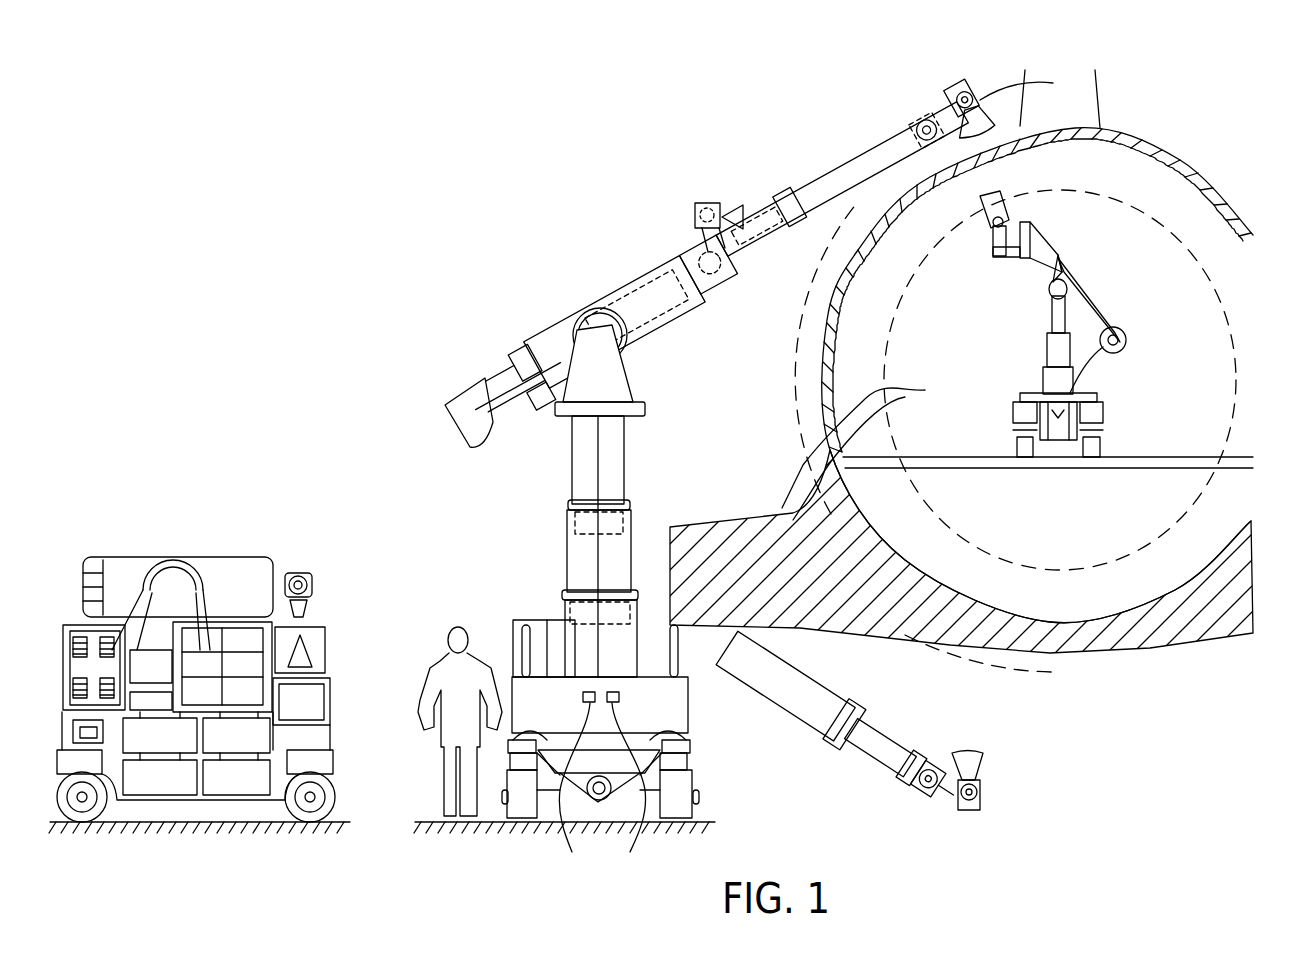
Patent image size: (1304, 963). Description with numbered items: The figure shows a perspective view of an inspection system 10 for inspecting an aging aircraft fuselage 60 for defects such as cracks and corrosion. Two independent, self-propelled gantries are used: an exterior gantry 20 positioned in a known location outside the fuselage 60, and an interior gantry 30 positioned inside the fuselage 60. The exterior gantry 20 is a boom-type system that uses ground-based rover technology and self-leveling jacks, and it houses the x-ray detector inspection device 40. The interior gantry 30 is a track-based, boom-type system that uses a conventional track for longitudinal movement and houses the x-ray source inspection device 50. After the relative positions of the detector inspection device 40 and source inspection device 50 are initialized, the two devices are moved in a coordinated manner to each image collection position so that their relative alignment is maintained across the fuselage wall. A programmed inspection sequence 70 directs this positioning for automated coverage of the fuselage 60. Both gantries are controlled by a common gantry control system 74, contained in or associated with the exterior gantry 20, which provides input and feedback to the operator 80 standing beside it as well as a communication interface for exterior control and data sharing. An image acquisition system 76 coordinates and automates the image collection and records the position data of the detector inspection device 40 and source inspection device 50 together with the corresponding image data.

The inspection system 10 is at (600, 192).
The exterior gantry 20 is at (688, 707).
The interior gantry 30 is at (1104, 403).
The x-ray detector inspection device 40 is at (985, 108).
The x-ray source inspection device 50 is at (1012, 200).
The aircraft fuselage 60 is at (1190, 158).
The programmed inspection sequence 70 is at (925, 390).
The gantry control system 74 is at (574, 791).
The image acquisition system 76 is at (627, 791).
The operator 80 is at (438, 658).